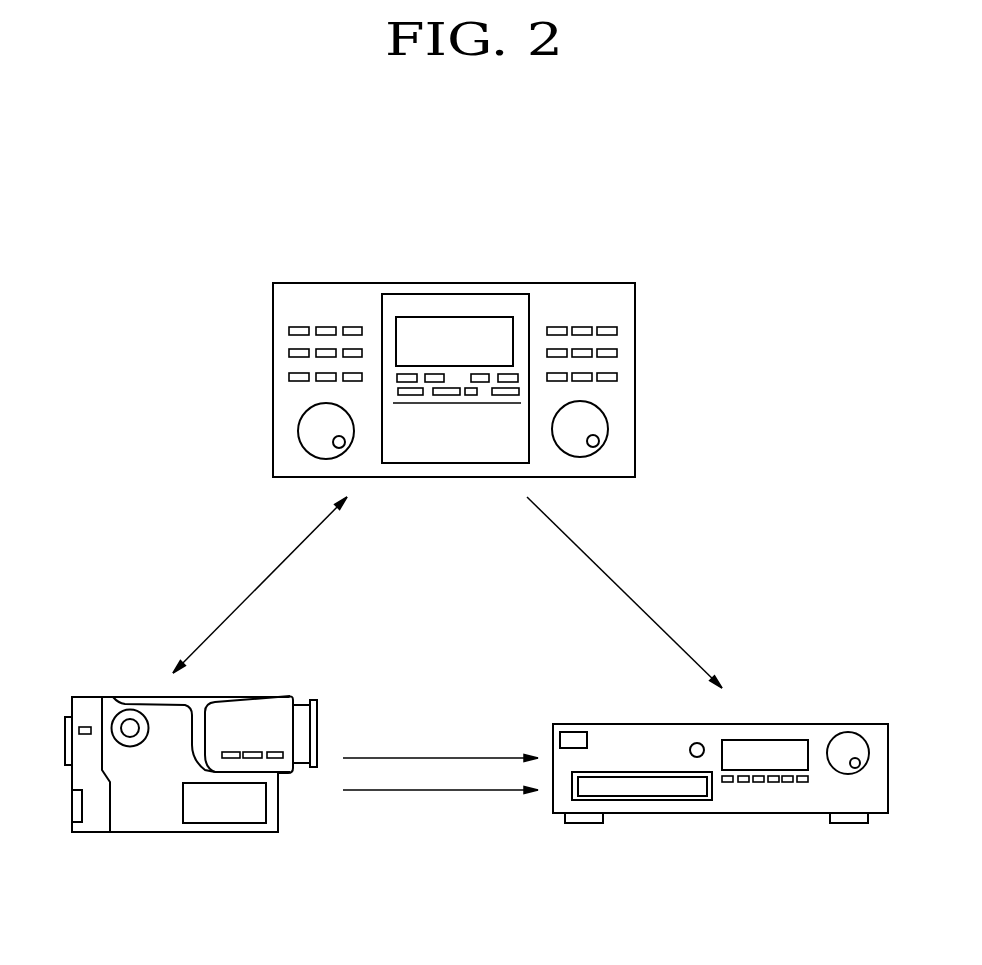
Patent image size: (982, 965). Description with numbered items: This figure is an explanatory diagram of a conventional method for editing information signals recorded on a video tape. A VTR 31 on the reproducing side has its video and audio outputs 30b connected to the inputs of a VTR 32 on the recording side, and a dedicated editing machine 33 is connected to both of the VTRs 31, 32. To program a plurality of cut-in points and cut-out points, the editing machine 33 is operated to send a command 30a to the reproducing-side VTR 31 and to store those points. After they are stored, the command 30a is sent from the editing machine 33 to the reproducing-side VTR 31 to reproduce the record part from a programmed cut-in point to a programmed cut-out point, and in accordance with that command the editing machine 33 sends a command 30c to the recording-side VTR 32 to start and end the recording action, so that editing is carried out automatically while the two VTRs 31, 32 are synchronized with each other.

The editing machine 33 is at (635, 362).
The VTR on the reproducing side 31 is at (87, 702).
The VTR on the recording side 32 is at (812, 723).
The command 30a is at (230, 620).
The video and audio outputs 30b is at (433, 757).
The command 30c is at (670, 637).